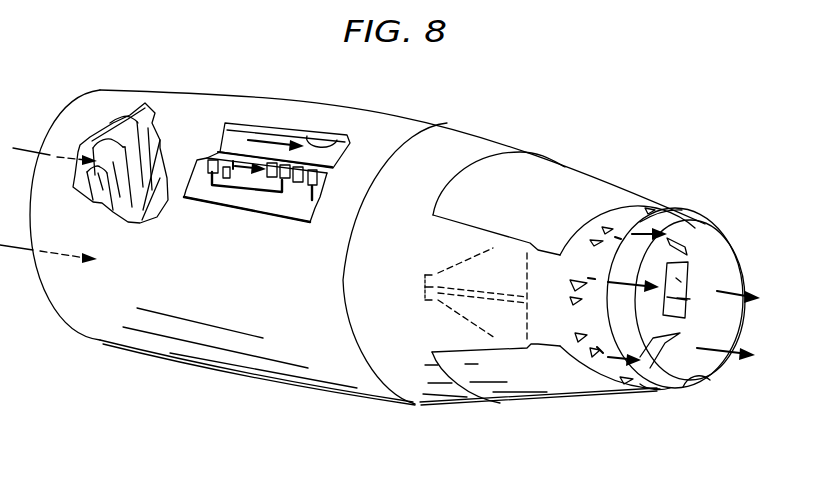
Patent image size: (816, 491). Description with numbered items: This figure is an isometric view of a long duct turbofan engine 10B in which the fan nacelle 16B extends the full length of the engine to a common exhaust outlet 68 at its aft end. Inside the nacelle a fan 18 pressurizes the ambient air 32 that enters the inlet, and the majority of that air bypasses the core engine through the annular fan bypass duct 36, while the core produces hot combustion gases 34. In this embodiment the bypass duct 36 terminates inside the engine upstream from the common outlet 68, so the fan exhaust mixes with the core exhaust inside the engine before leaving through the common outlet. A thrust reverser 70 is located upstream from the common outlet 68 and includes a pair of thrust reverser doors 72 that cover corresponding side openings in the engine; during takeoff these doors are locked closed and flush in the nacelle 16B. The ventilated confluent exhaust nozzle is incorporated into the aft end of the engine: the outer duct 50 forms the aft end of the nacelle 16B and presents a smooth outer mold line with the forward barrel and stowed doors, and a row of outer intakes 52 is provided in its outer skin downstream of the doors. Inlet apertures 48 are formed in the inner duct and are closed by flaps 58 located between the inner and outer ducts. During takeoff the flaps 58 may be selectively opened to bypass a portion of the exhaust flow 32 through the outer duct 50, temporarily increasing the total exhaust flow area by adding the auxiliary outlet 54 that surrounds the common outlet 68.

The turbofan engine 10B is at (432, 114).
The fan nacelle 16B is at (195, 368).
The fan 18 is at (123, 150).
The ambient air 32 is at (23, 148).
The combustion gases 34 is at (235, 168).
The fan bypass duct 36 is at (335, 138).
The inlet apertures 48 is at (680, 283).
The outer duct 50 is at (673, 210).
The outer intakes 52 is at (580, 302).
The auxiliary outlet 54 is at (655, 390).
The flaps 58 is at (677, 298).
The common exhaust outlet 68 is at (712, 380).
The thrust reverser 70 is at (600, 137).
The thrust reverser doors 72 is at (522, 211).